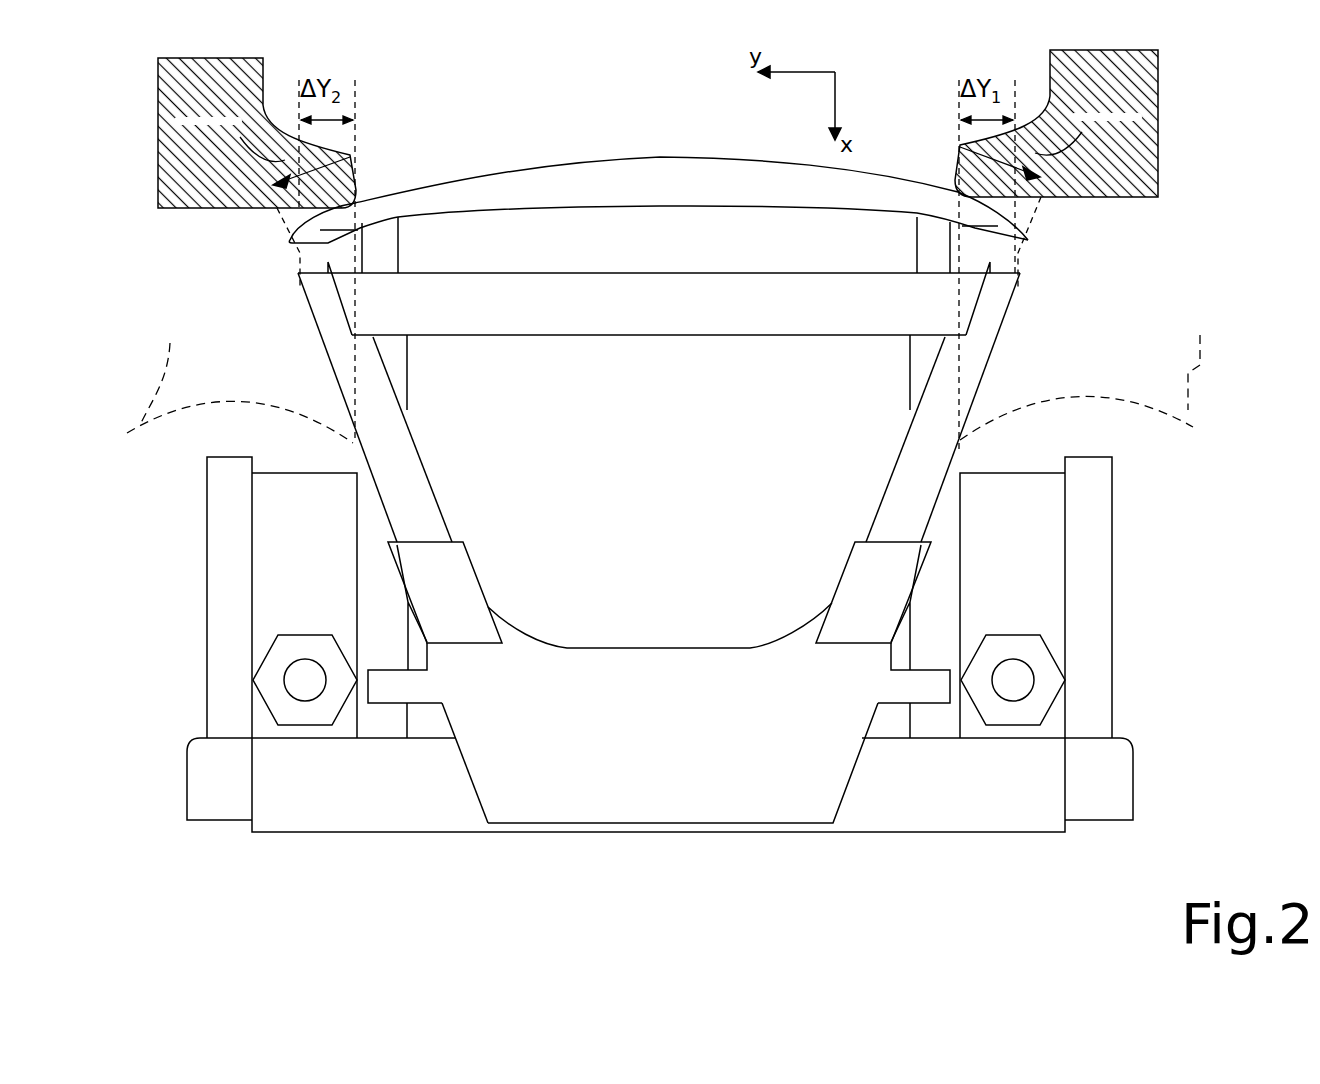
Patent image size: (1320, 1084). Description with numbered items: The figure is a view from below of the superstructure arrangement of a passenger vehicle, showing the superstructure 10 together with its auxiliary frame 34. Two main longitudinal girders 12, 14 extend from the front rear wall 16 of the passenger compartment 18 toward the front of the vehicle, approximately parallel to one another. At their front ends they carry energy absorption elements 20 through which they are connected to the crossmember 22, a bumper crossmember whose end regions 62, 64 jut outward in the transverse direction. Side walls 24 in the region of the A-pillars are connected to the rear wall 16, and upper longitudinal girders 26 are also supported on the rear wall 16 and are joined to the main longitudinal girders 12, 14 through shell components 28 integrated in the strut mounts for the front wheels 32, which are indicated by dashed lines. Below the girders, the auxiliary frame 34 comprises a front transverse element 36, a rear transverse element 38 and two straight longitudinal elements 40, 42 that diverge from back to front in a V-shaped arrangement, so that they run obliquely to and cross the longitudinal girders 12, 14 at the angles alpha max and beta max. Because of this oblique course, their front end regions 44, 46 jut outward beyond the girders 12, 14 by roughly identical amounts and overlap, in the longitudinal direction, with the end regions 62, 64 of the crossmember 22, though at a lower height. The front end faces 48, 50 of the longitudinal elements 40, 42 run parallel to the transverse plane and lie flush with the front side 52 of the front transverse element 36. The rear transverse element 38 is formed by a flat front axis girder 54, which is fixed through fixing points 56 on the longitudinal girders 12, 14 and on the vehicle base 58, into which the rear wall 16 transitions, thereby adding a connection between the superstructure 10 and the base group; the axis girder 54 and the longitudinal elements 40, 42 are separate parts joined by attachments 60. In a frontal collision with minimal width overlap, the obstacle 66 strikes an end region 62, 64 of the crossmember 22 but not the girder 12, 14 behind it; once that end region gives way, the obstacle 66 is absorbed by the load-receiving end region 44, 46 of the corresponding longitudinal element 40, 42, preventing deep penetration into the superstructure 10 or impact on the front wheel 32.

The superstructure 10 is at (1216, 188).
The main longitudinal girder 12 is at (378, 471).
The main longitudinal girder 14 is at (940, 471).
The front rear wall 16 is at (705, 799).
The passenger compartment 18 is at (688, 878).
The energy absorption element 20 is at (405, 352).
The crossmember 22 is at (668, 188).
The side wall 24 is at (186, 785).
The upper longitudinal girder 26 is at (205, 597).
The shell component 28 is at (323, 559).
The front wheel 32 is at (673, 374).
The auxiliary frame 34 is at (582, 244).
The front transverse element 36 is at (659, 320).
The rear transverse element 38 is at (660, 609).
The longitudinal element 40 is at (425, 493).
The longitudinal element 42 is at (895, 491).
The front end region 44 is at (320, 334).
The front end region 46 is at (998, 334).
The front end face 48 is at (328, 266).
The front end face 50 is at (990, 264).
The front side 52 is at (680, 268).
The front axis girder 54 is at (683, 680).
The fixing point 56 is at (393, 688).
The vehicle base 58 is at (445, 775).
The attachment 60 is at (448, 563).
The end region 62 is at (362, 230).
The end region 64 is at (950, 224).
The obstacle 66 is at (192, 210).